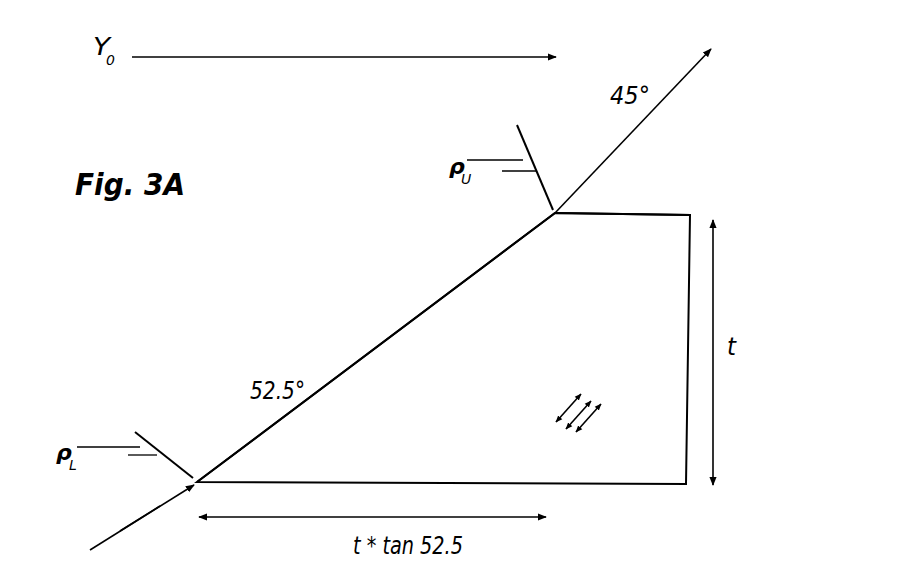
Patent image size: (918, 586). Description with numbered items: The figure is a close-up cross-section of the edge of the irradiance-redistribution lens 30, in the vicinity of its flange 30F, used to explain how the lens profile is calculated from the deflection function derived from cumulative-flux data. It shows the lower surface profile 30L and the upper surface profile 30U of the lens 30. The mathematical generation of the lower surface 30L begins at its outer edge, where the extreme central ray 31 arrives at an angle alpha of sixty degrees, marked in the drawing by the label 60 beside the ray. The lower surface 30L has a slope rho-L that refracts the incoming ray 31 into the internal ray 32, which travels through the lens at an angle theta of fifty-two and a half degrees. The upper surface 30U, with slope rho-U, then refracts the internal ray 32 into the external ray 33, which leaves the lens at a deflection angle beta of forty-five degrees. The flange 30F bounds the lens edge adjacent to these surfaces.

The irradiance-redistribution lens 30 is at (443, 348).
The upper surface profile 30U is at (516, 153).
The lower surface profile 30L is at (144, 439).
The flange 30F is at (643, 207).
The extreme central ray 31 is at (125, 530).
The internal ray 32 is at (435, 308).
The external ray 33 is at (642, 116).
The light beam 60 is at (119, 516).